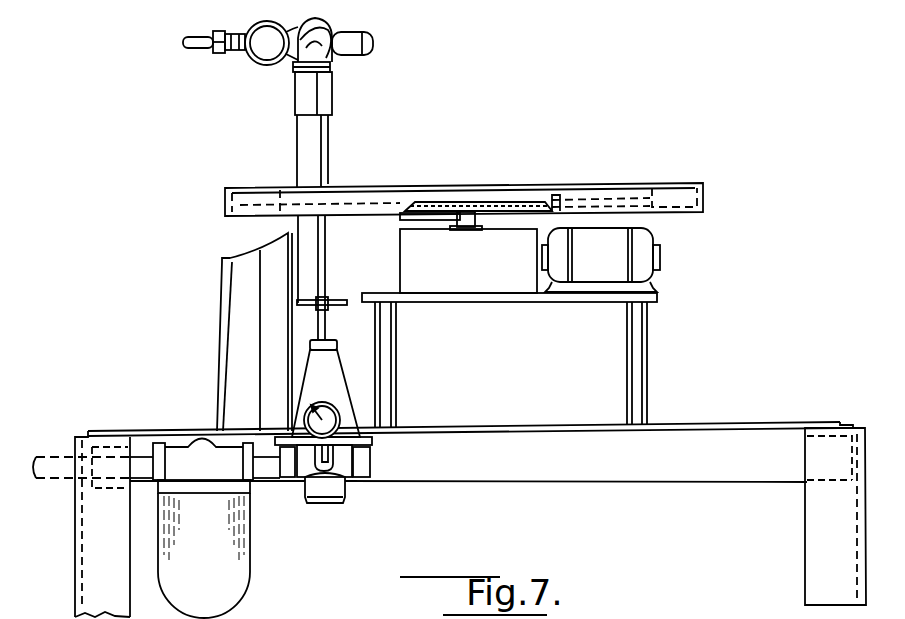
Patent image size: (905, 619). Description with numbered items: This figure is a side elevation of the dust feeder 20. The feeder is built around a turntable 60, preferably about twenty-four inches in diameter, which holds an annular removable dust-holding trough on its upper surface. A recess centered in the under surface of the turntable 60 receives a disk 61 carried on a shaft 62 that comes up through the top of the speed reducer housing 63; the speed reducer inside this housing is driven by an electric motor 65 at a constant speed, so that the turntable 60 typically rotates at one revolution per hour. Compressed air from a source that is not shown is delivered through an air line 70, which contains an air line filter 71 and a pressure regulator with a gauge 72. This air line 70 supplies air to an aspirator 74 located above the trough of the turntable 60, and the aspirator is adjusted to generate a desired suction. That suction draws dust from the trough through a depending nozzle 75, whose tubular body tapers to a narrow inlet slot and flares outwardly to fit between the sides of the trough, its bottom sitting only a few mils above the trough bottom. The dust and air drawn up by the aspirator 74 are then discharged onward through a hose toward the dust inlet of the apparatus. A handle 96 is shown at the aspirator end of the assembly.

The apparatus 20 is at (706, 190).
The turntable 60 is at (363, 217).
The disk 61 is at (498, 207).
The shaft 62 is at (403, 212).
The speed reducer housing 63 is at (468, 261).
The electric motor 65 is at (638, 257).
The air line 70 is at (53, 481).
The air line filter 71 is at (250, 573).
The pressure regulator with gauge 72 is at (348, 385).
The aspirator 74 is at (266, 44).
The nozzle 75 is at (328, 147).
The handle 96 is at (202, 48).